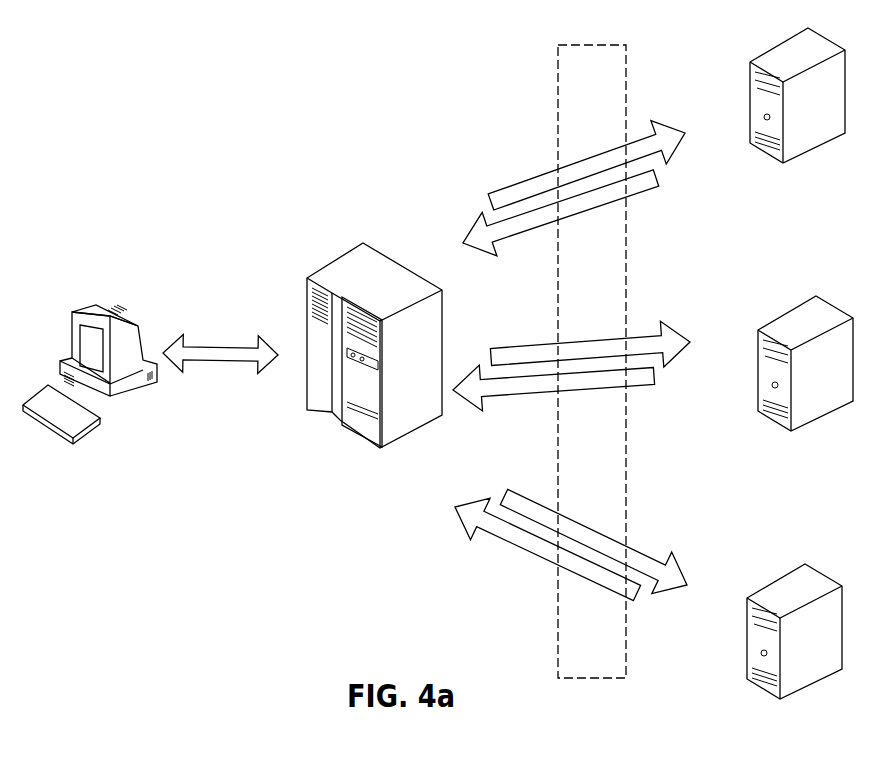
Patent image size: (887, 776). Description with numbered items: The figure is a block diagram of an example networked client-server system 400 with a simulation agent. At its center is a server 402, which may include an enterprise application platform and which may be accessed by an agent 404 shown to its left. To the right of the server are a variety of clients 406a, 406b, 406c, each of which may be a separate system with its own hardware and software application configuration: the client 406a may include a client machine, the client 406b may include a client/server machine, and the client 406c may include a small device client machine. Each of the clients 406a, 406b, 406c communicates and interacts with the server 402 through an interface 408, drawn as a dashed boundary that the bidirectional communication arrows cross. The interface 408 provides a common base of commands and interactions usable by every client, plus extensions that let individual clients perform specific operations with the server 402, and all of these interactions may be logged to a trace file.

The client-server system 400 is at (197, 92).
The server 402 is at (350, 253).
The agent 404 is at (85, 310).
The client 406a is at (804, 38).
The client 406b is at (812, 307).
The client 406c is at (802, 574).
The interface 408 is at (560, 48).